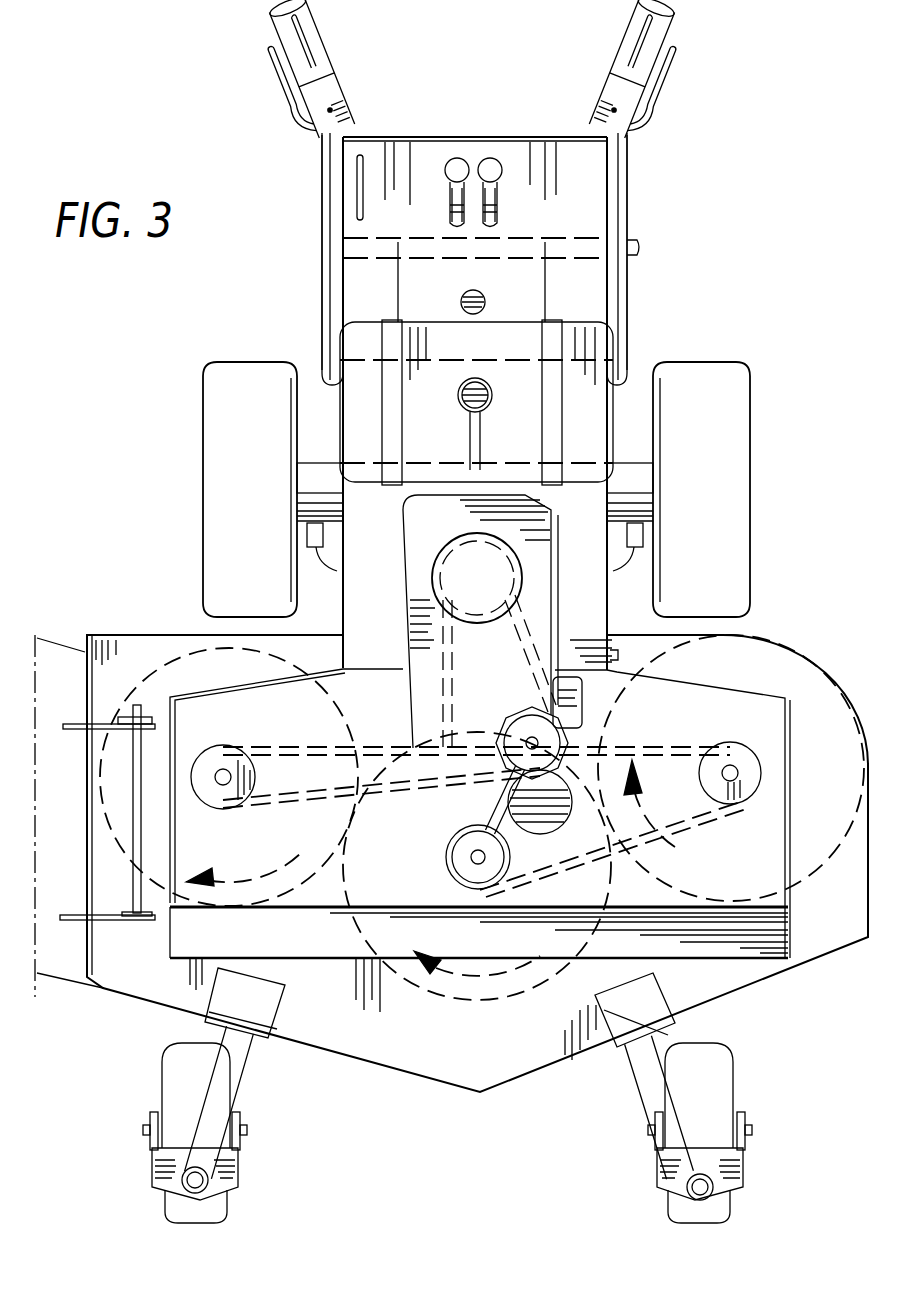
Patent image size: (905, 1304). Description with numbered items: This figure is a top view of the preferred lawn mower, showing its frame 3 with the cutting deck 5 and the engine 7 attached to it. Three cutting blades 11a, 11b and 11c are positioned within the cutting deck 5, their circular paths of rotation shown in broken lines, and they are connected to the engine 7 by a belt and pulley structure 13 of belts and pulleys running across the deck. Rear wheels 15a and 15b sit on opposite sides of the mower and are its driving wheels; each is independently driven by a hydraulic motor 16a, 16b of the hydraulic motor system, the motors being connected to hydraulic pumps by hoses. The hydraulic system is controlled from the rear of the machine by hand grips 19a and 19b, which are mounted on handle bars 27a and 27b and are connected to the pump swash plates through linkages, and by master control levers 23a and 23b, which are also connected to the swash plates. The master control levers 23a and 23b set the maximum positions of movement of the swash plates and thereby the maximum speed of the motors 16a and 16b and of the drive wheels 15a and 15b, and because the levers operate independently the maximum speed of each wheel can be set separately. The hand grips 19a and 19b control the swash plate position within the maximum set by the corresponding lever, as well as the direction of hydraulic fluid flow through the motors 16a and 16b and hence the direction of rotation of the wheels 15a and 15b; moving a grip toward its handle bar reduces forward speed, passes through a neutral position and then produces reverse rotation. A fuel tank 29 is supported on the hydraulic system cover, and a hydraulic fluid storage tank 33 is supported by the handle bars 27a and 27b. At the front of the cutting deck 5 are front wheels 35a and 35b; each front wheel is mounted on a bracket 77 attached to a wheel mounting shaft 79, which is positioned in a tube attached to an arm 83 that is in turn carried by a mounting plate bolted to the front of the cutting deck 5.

The frame 3 is at (587, 602).
The cutting deck 5 is at (743, 975).
The engine 7 is at (415, 563).
The cutting blade 11a is at (813, 848).
The cutting blade 11b is at (473, 987).
The cutting blade 11c is at (282, 873).
The belt and pulley structure 13 is at (313, 820).
The rear wheel 15a is at (727, 383).
The rear wheel 15b is at (214, 388).
The hydraulic motor 16a is at (633, 470).
The hydraulic motor 16b is at (316, 468).
The hand grip 19a is at (617, 35).
The hand grip 19b is at (322, 29).
The master control lever 23a is at (500, 184).
The master control lever 23b is at (448, 184).
The handle bar 27a is at (627, 194).
The handle bar 27b is at (322, 230).
The fuel tank 29 is at (600, 343).
The hydraulic fluid storage tank 33 is at (577, 293).
The front wheel 35a is at (690, 1098).
The front wheel 35b is at (172, 1072).
The bracket 77 is at (670, 1184).
The wheel mounting shaft 79 is at (713, 1180).
The arm 83 is at (653, 1072).